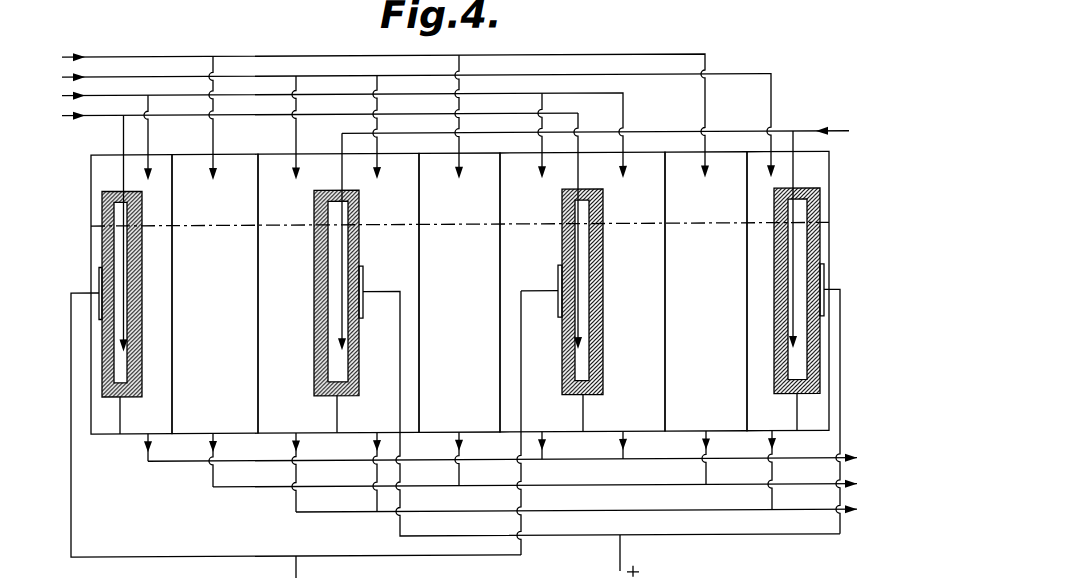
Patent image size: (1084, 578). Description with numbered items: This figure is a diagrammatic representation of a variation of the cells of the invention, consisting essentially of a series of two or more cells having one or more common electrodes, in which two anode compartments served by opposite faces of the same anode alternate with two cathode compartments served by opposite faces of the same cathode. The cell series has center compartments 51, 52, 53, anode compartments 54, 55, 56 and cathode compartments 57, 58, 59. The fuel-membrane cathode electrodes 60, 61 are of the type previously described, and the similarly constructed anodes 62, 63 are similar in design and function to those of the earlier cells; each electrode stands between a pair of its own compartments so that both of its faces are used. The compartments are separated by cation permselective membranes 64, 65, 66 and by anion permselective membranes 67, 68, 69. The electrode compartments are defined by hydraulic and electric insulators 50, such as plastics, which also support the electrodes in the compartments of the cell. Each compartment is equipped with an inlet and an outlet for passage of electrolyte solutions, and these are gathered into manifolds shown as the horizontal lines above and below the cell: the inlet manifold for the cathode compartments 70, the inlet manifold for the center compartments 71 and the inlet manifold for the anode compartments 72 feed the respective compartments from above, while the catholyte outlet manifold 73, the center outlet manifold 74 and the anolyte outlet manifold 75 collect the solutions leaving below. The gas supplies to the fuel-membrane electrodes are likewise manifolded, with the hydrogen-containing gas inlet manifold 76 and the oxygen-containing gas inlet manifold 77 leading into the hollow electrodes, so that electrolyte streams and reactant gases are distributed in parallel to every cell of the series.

The hydraulic and electric insulator 50 is at (117, 169).
The center compartment 51 is at (197, 415).
The center compartment 52 is at (448, 413).
The center compartment 53 is at (695, 413).
The anode compartment 54 is at (283, 413).
The anode compartment 55 is at (368, 412).
The anode compartment 56 is at (762, 413).
The cathode compartment 57 is at (139, 413).
The cathode compartment 58 is at (561, 413).
The cathode compartment 59 is at (637, 413).
The fuel-membrane cathode electrode 60 is at (102, 255).
The fuel-membrane cathode electrode 61 is at (603, 276).
The anode 62 is at (359, 249).
The anode 63 is at (818, 250).
The cation permselective membrane 64 is at (172, 302).
The cation permselective membrane 65 is at (500, 304).
The cation permselective membrane 66 is at (665, 305).
The anion permselective membrane 67 is at (258, 291).
The anion permselective membrane 68 is at (419, 283).
The anion permselective membrane 69 is at (747, 274).
The inlet manifold for the cathode compartments 70 is at (135, 94).
The inlet manifold for the center compartments 71 is at (135, 56).
The inlet manifold for the anode compartments 72 is at (143, 78).
The catholyte outlet manifold 73 is at (807, 458).
The center outlet manifold 74 is at (817, 482).
The anolyte outlet manifold 75 is at (814, 507).
The hydrogen-containing gas inlet manifold 76 is at (809, 128).
The oxygen-containing gas inlet manifold 77 is at (101, 117).